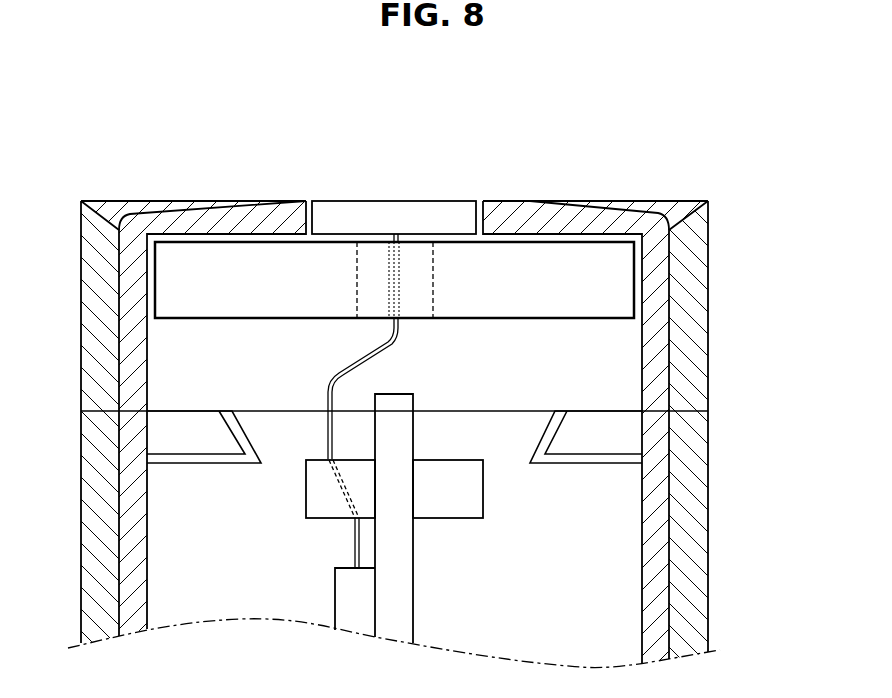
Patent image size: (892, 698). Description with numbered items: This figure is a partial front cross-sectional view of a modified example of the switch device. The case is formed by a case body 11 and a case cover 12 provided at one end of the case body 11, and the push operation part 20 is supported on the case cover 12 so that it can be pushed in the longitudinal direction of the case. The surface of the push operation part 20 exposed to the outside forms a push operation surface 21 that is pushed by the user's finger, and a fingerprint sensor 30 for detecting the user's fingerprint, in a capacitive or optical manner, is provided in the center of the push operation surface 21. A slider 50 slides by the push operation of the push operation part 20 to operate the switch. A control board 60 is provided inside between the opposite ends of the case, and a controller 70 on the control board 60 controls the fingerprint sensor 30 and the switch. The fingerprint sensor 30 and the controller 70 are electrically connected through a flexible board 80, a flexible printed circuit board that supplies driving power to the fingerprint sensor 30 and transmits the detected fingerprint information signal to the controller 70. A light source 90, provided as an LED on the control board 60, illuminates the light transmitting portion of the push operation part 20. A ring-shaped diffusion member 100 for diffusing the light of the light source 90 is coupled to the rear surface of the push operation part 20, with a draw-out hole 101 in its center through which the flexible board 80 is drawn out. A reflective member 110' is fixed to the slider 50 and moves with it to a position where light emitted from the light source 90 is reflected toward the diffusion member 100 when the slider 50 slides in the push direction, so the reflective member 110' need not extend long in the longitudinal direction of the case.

The case body 11 is at (708, 553).
The case cover 12 is at (708, 333).
The push operation part 20 is at (446, 392).
The push operation surface 21 is at (583, 201).
The fingerprint sensor 30 is at (365, 201).
The slider 50 is at (670, 508).
The control board 60 is at (416, 610).
The controller 70 is at (342, 588).
The flexible board 80 is at (352, 363).
The light source 90 is at (316, 497).
The diffusion member 100 is at (563, 307).
The draw-out hole 101 is at (432, 285).
The reflective member 110' is at (472, 437).